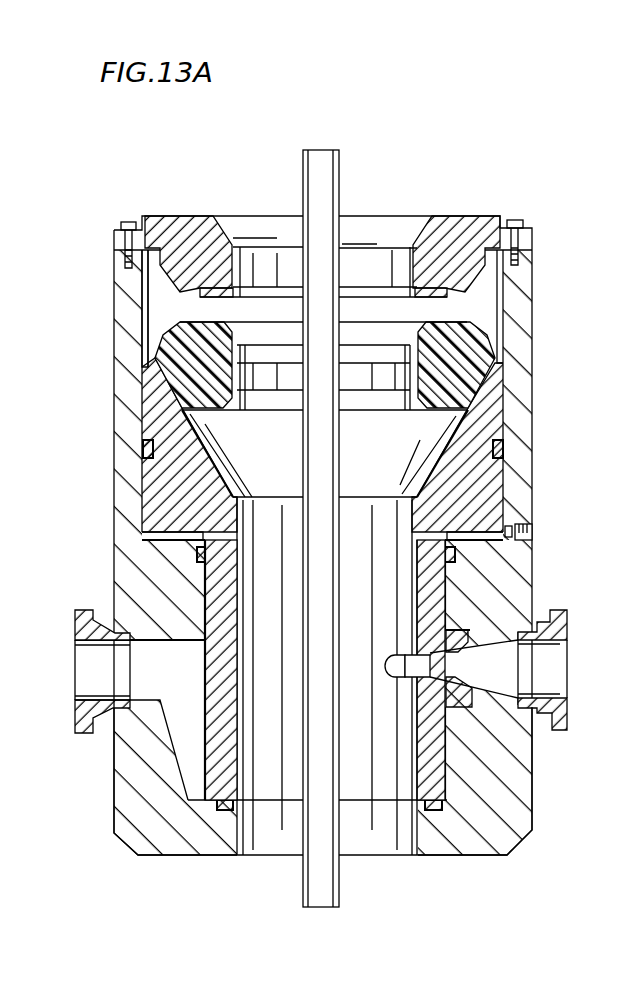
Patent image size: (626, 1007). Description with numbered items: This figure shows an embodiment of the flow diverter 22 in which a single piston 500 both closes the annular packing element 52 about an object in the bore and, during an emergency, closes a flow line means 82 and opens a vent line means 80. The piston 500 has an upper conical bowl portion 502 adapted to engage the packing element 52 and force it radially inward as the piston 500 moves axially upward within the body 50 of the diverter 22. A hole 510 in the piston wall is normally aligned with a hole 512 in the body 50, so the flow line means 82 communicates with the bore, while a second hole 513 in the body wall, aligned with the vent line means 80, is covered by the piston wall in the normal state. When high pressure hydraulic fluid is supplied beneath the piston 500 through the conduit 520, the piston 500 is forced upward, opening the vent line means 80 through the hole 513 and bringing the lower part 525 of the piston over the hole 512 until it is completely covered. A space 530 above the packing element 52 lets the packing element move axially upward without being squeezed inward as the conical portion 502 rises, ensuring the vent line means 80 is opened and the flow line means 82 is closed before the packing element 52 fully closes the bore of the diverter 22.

The flow diverter 22 is at (461, 158).
The body 50 is at (137, 812).
The annular packing element 52 is at (177, 342).
The vent line means 80 is at (83, 733).
The flow line means 82 is at (567, 723).
The single piston 500 is at (203, 584).
The upper conical bowl portion 502 is at (147, 404).
The hole in the piston wall 510 is at (390, 652).
The hole in the body 512 is at (503, 667).
The second hole in the body wall 513 is at (187, 667).
The conduit 520 is at (510, 522).
The lower part of the piston 525 is at (440, 773).
The space above the packing element 530 is at (488, 295).